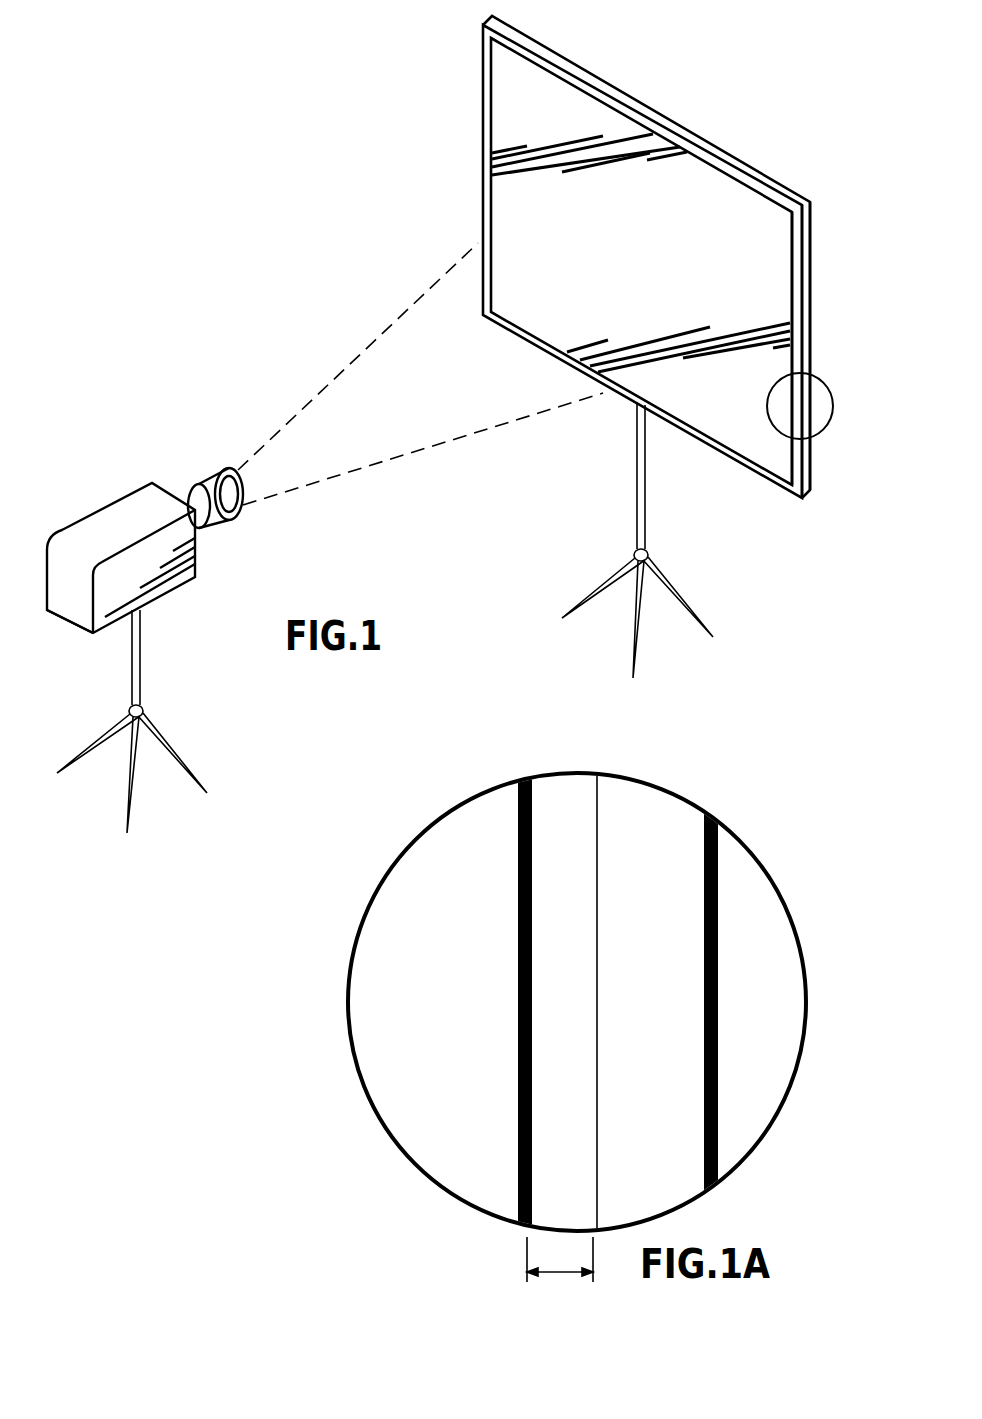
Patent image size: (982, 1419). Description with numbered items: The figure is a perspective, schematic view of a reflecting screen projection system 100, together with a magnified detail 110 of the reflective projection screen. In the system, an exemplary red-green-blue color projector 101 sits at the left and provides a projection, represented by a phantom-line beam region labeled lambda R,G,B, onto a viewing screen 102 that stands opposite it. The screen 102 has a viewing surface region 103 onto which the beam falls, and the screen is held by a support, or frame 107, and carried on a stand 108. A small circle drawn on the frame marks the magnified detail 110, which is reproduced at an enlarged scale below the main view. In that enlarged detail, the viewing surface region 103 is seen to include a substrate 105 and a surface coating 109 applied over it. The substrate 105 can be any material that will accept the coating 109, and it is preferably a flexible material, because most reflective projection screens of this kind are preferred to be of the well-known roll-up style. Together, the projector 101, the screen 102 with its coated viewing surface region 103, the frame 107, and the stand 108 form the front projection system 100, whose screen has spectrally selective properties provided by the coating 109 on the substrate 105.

In FIG. 1, the reflecting screen projection system 100 is at (220, 87).
In FIG. 1, the RGB color projector 101 is at (110, 495).
In FIG. 1, the viewing screen 102 is at (690, 112).
In FIG. 1, the viewing surface region 103 is at (660, 271).
In FIG. 1A, the substrate 105 is at (560, 1278).
In FIG. 1, the frame 107 is at (810, 236).
In FIG. 1A, the frame 107 is at (658, 808).
In FIG. 1, the stand 108 is at (657, 512).
In FIG. 1A, the surface coating 109 is at (520, 865).
In FIG. 1, the magnified detail 110 is at (832, 435).
In FIG. 1A, the magnified detail 110 is at (400, 822).